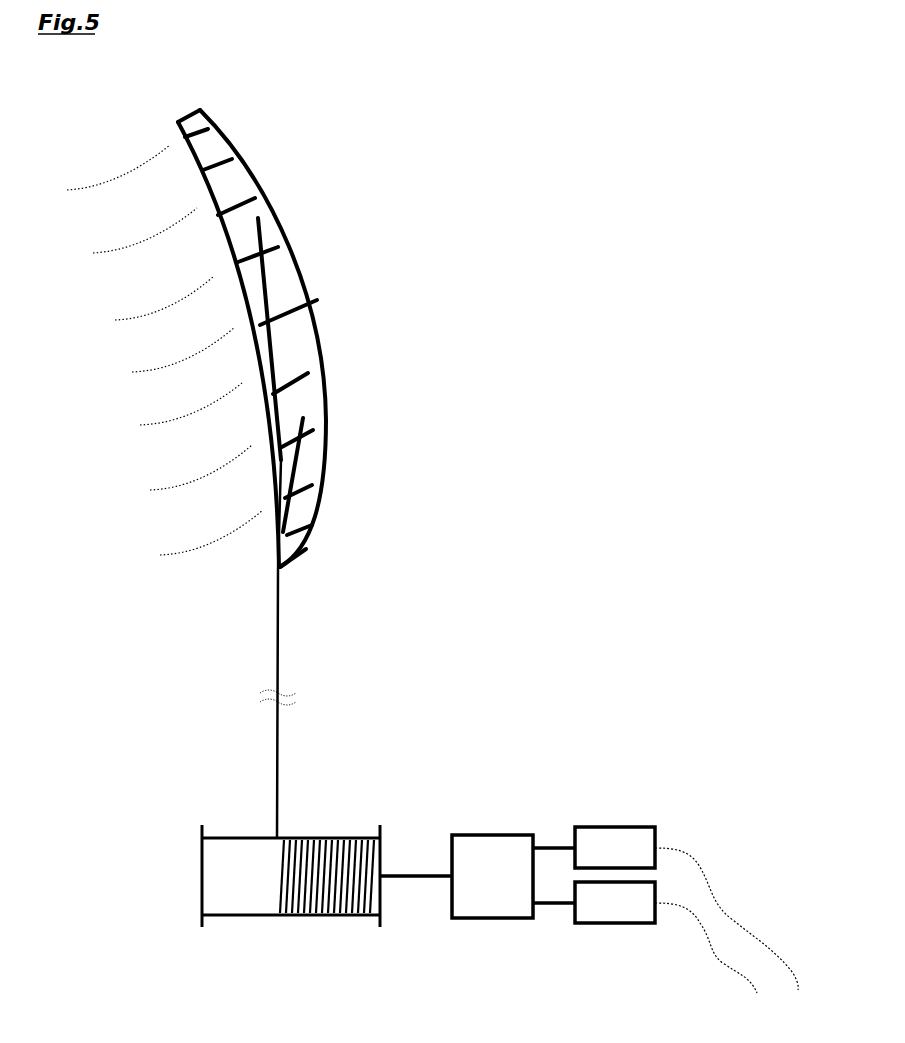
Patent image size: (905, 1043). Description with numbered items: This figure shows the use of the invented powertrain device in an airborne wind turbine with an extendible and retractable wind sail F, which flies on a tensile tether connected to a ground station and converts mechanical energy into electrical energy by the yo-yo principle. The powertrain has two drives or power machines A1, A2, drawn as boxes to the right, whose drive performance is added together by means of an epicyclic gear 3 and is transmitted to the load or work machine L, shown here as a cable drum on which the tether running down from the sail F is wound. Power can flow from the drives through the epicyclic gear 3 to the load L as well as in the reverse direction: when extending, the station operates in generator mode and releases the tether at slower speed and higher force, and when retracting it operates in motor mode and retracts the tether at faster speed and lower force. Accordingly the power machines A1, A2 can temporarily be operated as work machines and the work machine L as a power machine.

The sail (aerodynamic foil) F is at (292, 335).
The load or work machine L is at (238, 877).
The epicyclic gear 3 is at (489, 848).
The first drive or power machine A1 is at (615, 848).
The second drive or power machine A2 is at (615, 903).